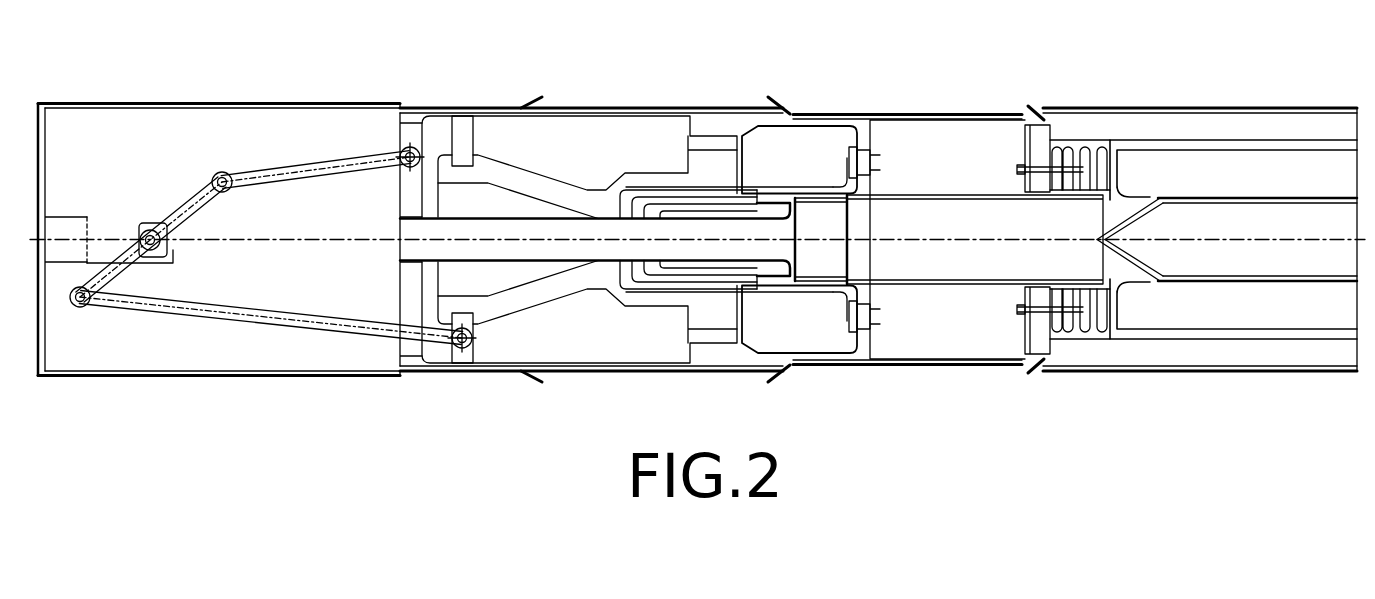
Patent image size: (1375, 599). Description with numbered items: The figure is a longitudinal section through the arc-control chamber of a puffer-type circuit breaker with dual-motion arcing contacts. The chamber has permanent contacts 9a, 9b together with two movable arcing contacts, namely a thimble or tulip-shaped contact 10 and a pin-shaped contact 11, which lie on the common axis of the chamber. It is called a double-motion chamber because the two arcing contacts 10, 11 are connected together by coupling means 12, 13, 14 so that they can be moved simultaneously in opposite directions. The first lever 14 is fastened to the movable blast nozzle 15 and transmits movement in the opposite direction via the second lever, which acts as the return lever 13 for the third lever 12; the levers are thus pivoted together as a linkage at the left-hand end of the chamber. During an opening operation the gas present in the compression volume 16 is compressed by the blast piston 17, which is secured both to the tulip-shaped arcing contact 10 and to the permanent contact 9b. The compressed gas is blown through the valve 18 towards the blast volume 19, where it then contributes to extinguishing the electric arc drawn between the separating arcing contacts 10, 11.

The permanent contact 9a is at (780, 112).
The permanent contact 9b is at (830, 124).
The tulip-shaped contact 10 is at (648, 214).
The pin-shaped contact 11 is at (587, 228).
The third lever 12 is at (295, 167).
The return lever 13 is at (178, 222).
The first lever 14 is at (384, 331).
The movable blast nozzle 15 is at (522, 301).
The compression volume 16 is at (997, 343).
The blast piston 17 is at (1128, 196).
The valve 18 is at (863, 173).
The blast volume 19 is at (819, 342).